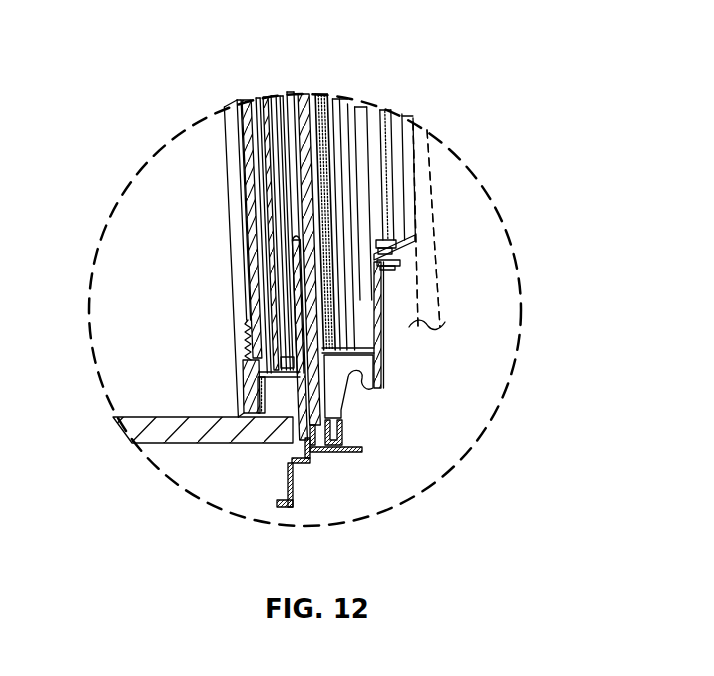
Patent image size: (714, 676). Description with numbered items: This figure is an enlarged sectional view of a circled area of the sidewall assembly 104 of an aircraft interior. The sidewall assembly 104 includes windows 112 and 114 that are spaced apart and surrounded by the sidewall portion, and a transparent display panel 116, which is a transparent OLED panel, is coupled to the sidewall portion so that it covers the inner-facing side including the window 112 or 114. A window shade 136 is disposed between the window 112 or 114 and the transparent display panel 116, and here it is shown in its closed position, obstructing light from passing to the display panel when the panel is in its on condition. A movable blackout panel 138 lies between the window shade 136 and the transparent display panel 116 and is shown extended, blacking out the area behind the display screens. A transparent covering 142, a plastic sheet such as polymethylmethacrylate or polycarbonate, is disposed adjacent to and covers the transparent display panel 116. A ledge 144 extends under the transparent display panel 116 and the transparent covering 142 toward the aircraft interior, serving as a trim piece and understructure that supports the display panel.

The sidewall assembly 104 is at (480, 86).
The window 112 is at (437, 300).
The window 114 is at (515, 224).
The transparent display panel 116 is at (251, 100).
The window shade 136 is at (327, 106).
The movable blackout panel 138 is at (268, 97).
The transparent covering 142 is at (228, 195).
The ledge 144 is at (125, 420).